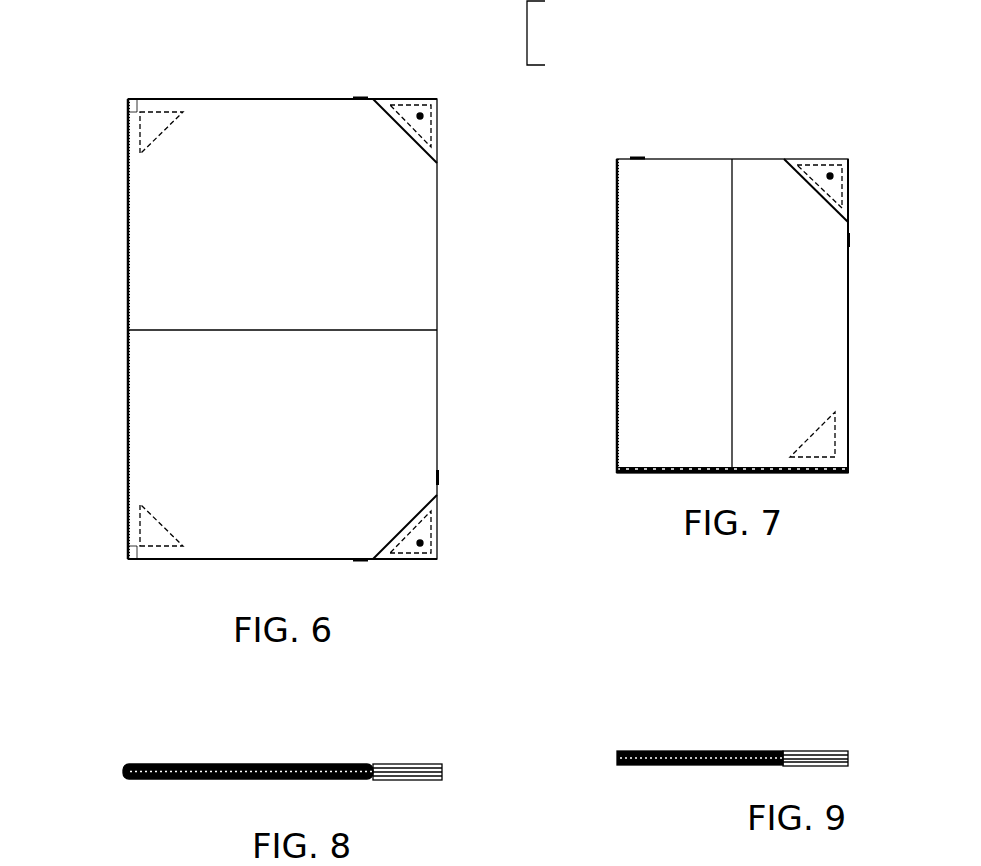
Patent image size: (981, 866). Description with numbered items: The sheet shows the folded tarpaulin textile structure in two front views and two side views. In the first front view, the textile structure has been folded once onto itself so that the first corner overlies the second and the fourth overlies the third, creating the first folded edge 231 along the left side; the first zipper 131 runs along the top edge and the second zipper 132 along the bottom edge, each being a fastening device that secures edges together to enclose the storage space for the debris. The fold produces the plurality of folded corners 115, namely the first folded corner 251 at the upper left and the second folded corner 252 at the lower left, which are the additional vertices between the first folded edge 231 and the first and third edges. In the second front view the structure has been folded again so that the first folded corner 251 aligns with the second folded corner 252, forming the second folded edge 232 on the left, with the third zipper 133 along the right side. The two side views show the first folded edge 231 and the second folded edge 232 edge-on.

In FIG. 6, the plurality of folded corners 115 is at (527, 35).
In FIG. 6, the first zipper 131 is at (278, 98).
In FIG. 6, the second zipper 132 is at (320, 559).
In FIG. 7, the third zipper 133 is at (848, 323).
In FIG. 6, the first folded edge 231 is at (115, 331).
In FIG. 8, the first folded edge 231 is at (123, 771).
In FIG. 7, the second folded edge 232 is at (605, 310).
In FIG. 9, the second folded edge 232 is at (617, 758).
In FIG. 6, the first folded corner 251 is at (119, 90).
In FIG. 6, the second folded corner 252 is at (119, 570).